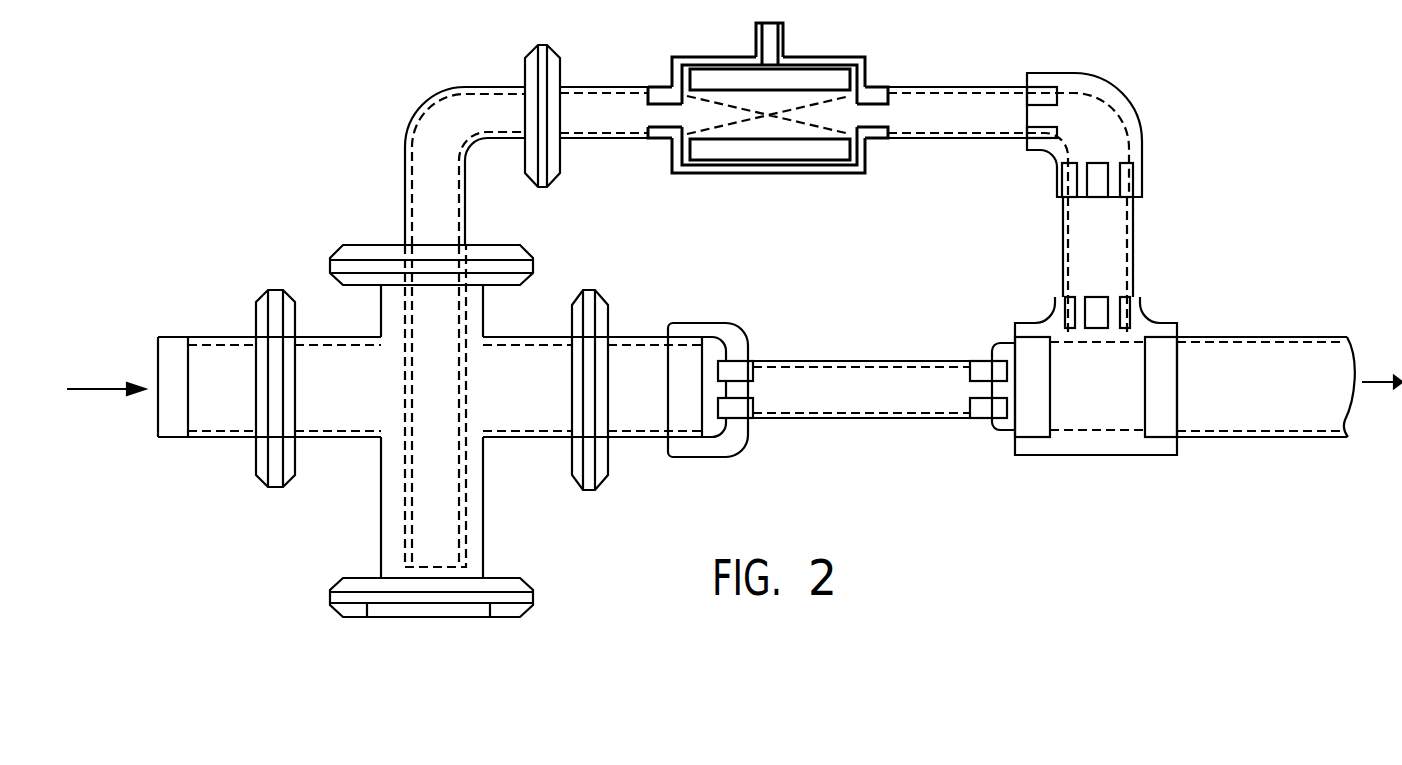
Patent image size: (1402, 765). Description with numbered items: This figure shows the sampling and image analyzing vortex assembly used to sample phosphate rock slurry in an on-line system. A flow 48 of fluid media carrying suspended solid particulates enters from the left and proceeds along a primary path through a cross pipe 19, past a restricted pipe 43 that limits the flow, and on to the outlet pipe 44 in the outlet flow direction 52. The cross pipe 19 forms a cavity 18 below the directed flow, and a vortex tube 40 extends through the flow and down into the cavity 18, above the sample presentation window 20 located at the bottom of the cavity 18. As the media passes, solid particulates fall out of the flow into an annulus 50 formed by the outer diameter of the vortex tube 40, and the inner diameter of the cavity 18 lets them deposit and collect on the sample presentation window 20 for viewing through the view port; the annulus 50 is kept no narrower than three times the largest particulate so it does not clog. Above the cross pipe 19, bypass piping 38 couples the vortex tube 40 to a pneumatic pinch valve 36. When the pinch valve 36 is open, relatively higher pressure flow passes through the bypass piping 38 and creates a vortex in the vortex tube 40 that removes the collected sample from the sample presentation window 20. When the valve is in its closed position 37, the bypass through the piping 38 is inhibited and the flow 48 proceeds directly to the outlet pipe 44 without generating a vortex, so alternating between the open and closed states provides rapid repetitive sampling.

The cavity 18 is at (472, 535).
The cross pipe 19 is at (380, 460).
The sample presentation window 20 is at (453, 617).
The pneumatic pinch valve 36 is at (712, 173).
The closed position of pinch valve 37 is at (805, 107).
The piping 38 is at (428, 108).
The vortex tube 40 is at (467, 394).
The restricted pipe 43 is at (808, 420).
The outlet pipe 44 is at (1237, 337).
The flow 48 is at (92, 389).
The annulus 50 is at (467, 488).
The outlet flow direction 52 is at (1387, 385).